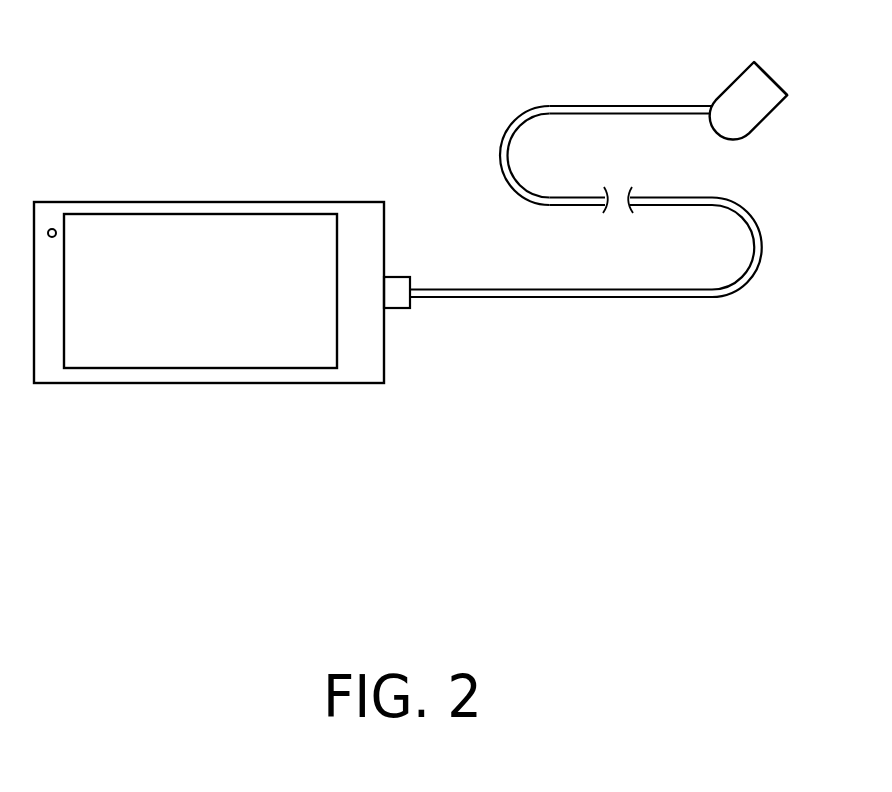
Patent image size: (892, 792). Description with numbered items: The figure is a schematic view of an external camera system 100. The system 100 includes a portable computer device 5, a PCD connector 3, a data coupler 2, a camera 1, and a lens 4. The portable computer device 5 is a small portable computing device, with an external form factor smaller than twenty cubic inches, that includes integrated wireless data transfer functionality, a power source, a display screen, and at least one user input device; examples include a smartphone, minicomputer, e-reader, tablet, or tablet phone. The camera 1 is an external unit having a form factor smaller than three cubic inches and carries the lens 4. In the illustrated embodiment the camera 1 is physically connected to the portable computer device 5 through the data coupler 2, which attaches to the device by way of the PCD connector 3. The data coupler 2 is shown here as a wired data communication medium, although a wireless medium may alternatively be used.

The external camera system 100 is at (145, 114).
The camera 1 is at (738, 75).
The data coupler 2 is at (627, 105).
The PCD connector 3 is at (397, 292).
The lens 4 is at (772, 75).
The portable computer device 5 is at (173, 375).